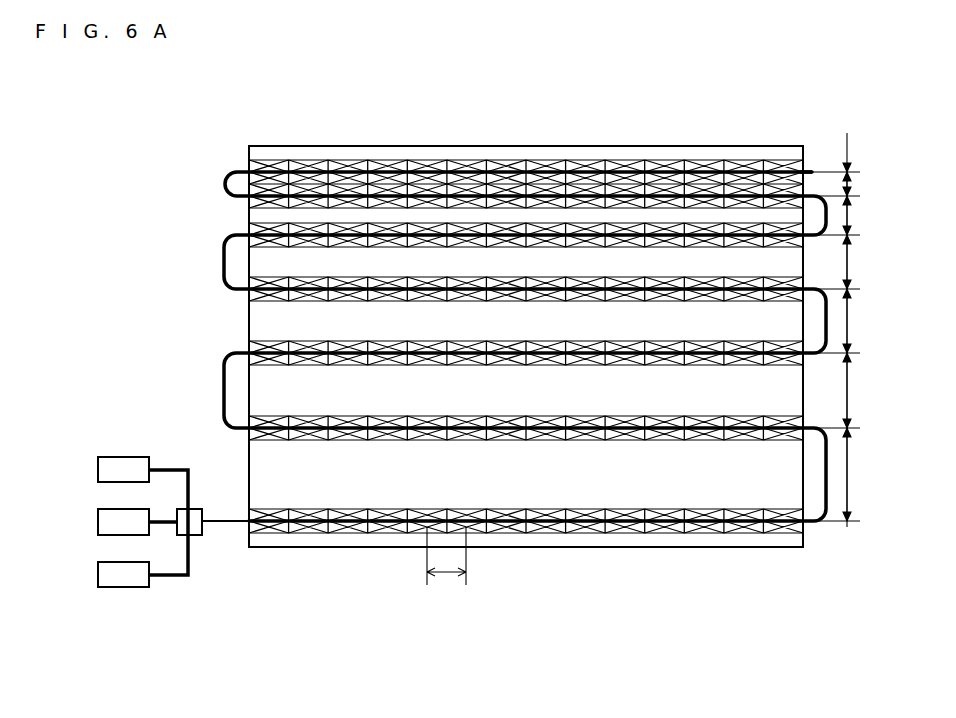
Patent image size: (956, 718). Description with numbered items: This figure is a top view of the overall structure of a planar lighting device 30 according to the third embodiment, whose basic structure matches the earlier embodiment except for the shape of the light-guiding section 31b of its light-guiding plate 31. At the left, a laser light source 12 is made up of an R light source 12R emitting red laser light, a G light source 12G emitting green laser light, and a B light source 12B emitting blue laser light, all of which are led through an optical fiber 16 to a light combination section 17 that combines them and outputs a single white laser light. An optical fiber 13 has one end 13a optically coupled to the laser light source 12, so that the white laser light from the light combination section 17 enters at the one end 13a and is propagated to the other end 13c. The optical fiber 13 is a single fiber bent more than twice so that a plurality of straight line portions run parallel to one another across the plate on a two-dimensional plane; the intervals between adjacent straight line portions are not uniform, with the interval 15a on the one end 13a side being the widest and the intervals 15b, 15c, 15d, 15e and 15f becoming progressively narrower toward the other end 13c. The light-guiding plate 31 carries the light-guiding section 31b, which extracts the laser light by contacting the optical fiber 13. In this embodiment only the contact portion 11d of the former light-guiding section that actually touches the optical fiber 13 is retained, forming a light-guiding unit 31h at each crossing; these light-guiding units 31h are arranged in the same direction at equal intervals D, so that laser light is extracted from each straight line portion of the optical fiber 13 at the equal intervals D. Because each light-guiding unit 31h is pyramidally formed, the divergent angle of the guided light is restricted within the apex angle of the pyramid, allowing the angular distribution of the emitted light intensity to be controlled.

The planar lighting device 30 is at (190, 100).
The light-guiding plate 31 is at (249, 160).
The light-guiding unit 31h is at (580, 531).
The light-guiding section 31b is at (665, 535).
The contact portion 11d is at (705, 528).
The optical fiber 13 is at (226, 361).
The one end 13a is at (206, 523).
The other end 13c is at (814, 168).
The laser light source 12 is at (80, 430).
The R light source 12R is at (140, 456).
The G light source 12G is at (140, 509).
The B light source 12B is at (140, 561).
The optical fiber 16 is at (172, 576).
The light combination section 17 is at (196, 508).
The interval 15a is at (867, 474).
The interval 15b is at (868, 390).
The interval 15c is at (867, 321).
The interval 15d is at (868, 262).
The interval 15e is at (867, 215).
The interval 15f is at (865, 184).
The equal intervals D is at (446, 567).